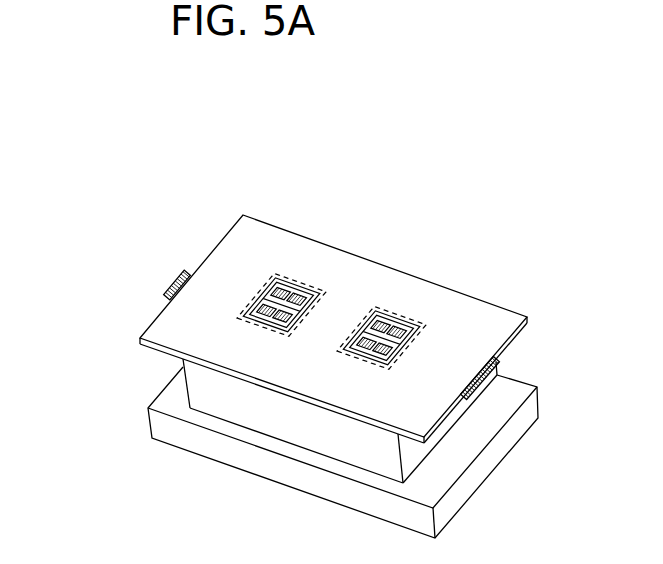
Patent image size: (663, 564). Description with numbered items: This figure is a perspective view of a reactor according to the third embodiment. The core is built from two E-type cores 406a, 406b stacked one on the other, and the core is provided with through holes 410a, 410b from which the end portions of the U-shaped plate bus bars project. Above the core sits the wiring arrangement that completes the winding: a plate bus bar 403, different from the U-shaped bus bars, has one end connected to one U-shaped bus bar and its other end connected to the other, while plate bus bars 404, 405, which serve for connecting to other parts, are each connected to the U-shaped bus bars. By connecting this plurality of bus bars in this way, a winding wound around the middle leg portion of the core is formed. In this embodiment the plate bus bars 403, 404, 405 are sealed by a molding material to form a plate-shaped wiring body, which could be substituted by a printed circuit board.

The plate bus bar 403 is at (357, 355).
The plate bus bar 404 is at (280, 297).
The plate bus bar 405 is at (417, 333).
The E-type core 406a is at (423, 442).
The E-type core 406b is at (460, 403).
The through hole 410a is at (237, 318).
The through hole 410b is at (408, 356).